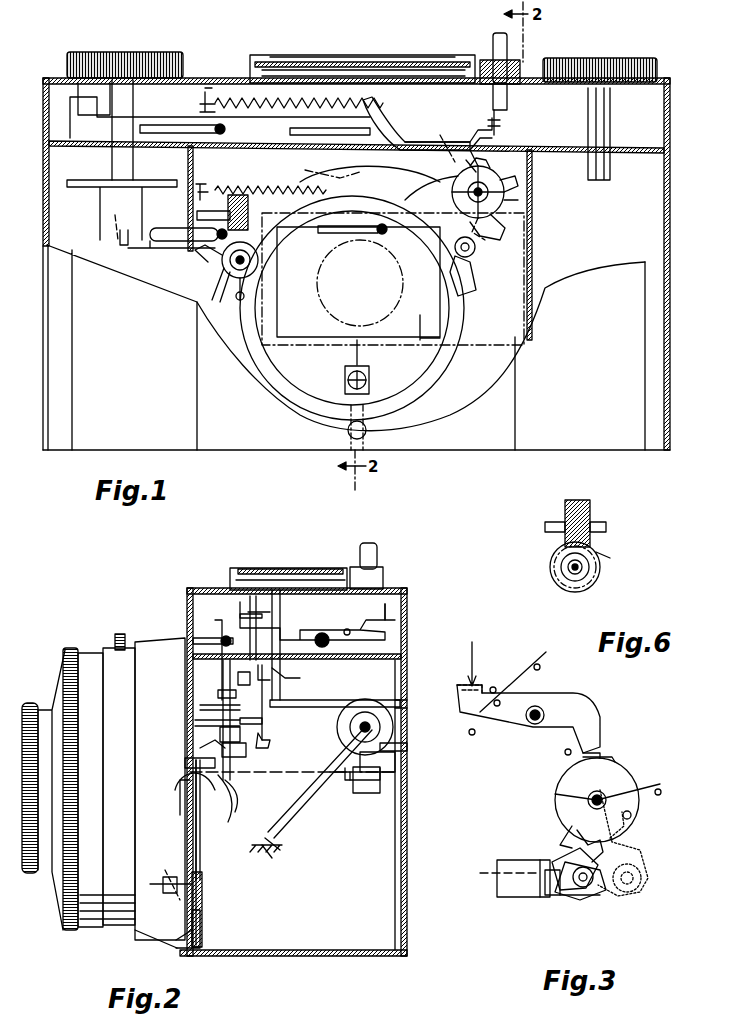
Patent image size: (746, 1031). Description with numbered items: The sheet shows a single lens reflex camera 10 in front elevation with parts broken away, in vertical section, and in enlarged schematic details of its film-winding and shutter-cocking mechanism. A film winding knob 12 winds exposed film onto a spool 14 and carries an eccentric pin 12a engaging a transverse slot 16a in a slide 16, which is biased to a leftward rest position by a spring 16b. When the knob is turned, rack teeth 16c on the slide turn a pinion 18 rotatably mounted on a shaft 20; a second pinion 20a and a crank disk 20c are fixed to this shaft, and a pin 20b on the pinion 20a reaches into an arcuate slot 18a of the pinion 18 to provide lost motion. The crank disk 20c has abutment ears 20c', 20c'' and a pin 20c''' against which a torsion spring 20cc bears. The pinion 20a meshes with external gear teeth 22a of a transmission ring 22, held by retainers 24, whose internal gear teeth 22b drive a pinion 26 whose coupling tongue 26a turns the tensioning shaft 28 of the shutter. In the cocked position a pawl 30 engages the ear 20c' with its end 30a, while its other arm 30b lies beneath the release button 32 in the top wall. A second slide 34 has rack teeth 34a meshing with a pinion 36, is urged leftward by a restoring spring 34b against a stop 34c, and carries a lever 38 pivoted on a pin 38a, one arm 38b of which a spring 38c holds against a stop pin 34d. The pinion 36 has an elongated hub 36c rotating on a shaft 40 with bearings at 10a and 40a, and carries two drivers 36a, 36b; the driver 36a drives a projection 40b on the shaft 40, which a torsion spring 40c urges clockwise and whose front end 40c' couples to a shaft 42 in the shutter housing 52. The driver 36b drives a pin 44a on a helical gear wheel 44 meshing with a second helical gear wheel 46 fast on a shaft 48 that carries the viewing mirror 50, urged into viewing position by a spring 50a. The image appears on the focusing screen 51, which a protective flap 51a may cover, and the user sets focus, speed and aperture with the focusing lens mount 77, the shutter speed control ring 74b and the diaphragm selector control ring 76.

In FIG. 1, the single lens reflex camera 10 is at (665, 182).
In FIG. 2, the single lens reflex camera 10 is at (403, 828).
In FIG. 2, the bearing in the camera body 10a is at (290, 778).
In FIG. 1, the film winding knob 12 is at (118, 64).
In FIG. 1, the pin 12a is at (88, 92).
In FIG. 2, the pin 12a is at (278, 600).
In FIG. 1, the spool 14 is at (100, 205).
In FIG. 1, the slide 16 is at (92, 135).
In FIG. 2, the slide 16 is at (215, 626).
In FIG. 1, the transverse slot 16a is at (103, 96).
In FIG. 2, the transverse slot 16a is at (252, 600).
In FIG. 1, the spring 16b is at (225, 100).
In FIG. 1, the rack teeth 16c is at (432, 182).
In FIG. 2, the pinion 18 is at (200, 707).
In FIG. 1, the arcuate slot 18a is at (445, 140).
In FIG. 1, the shaft 20 is at (510, 162).
In FIG. 2, the shaft 20 is at (340, 702).
In FIG. 3, the shaft 20 is at (556, 794).
In FIG. 1, the pinion 20a is at (518, 225).
In FIG. 2, the pinion 20a is at (222, 690).
In FIG. 1, the pin 20b is at (520, 203).
In FIG. 2, the pin 20b is at (218, 700).
In FIG. 2, the crank disk 20c is at (285, 702).
In FIG. 3, the crank disk 20c is at (598, 826).
In FIG. 1, the abutment ear 20c' is at (499, 141).
In FIG. 2, the abutment ear 20c' is at (265, 653).
In FIG. 3, the abutment ear 20c' is at (623, 750).
In FIG. 1, the abutment ear 20c'' is at (528, 240).
In FIG. 2, the abutment ear 20c'' is at (275, 719).
In FIG. 3, the abutment ear 20c'' is at (535, 827).
In FIG. 2, the pin 20c''' is at (289, 736).
In FIG. 1, the torsion spring 20cc is at (512, 187).
In FIG. 2, the torsion spring 20cc is at (238, 675).
In FIG. 3, the torsion spring 20cc is at (630, 824).
In FIG. 1, the transmission ring 22 is at (472, 306).
In FIG. 2, the transmission ring 22 is at (196, 836).
In FIG. 1, the external gear teeth 22a is at (320, 172).
In FIG. 1, the internal gear teeth 22b is at (425, 330).
In FIG. 2, the retainers 24 is at (202, 918).
In FIG. 1, the pinion 26 is at (330, 385).
In FIG. 2, the pinion 26 is at (202, 874).
In FIG. 1, the coupling tongue 26a is at (357, 340).
In FIG. 2, the coupling tongue 26a is at (160, 890).
In FIG. 2, the tensioning shaft 28 is at (165, 876).
In FIG. 1, the pawl 30 is at (468, 120).
In FIG. 2, the pawl 30 is at (322, 636).
In FIG. 3, the pawl 30 is at (548, 700).
In FIG. 1, the end of pawl 30a is at (470, 150).
In FIG. 2, the end of pawl 30a is at (288, 676).
In FIG. 3, the end of pawl 30a is at (598, 748).
In FIG. 1, the arm of pawl 30b is at (497, 118).
In FIG. 2, the arm of pawl 30b is at (392, 612).
In FIG. 3, the arm of pawl 30b is at (481, 690).
In FIG. 1, the release button 32 is at (506, 58).
In FIG. 2, the release button 32 is at (373, 555).
In FIG. 1, the slide 34 is at (163, 228).
In FIG. 2, the slide 34 is at (195, 723).
In FIG. 3, the slide 34 is at (536, 895).
In FIG. 1, the rack teeth 34a is at (178, 246).
In FIG. 1, the restoring spring 34b is at (216, 186).
In FIG. 1, the stop 34c is at (115, 225).
In FIG. 3, the stop pin 34d is at (497, 874).
In FIG. 2, the pinion 36 is at (232, 815).
In FIG. 1, the driver 36a is at (205, 275).
In FIG. 2, the driver 36a is at (225, 782).
In FIG. 1, the driver 36b is at (258, 258).
In FIG. 2, the driver 36b is at (335, 790).
In FIG. 6, the driver 36b is at (596, 577).
In FIG. 2, the hub 36c is at (318, 750).
In FIG. 6, the hub 36c is at (592, 560).
In FIG. 1, the lever 38 is at (476, 248).
In FIG. 2, the lever 38 is at (236, 735).
In FIG. 3, the lever 38 is at (604, 892).
In FIG. 1, the pin 38a is at (462, 262).
In FIG. 2, the pin 38a is at (262, 752).
In FIG. 3, the pin 38a is at (586, 890).
In FIG. 3, the arm of lever 38b is at (558, 900).
In FIG. 3, the spring 38c is at (540, 852).
In FIG. 1, the shaft 40 is at (252, 268).
In FIG. 2, the shaft 40 is at (340, 800).
In FIG. 6, the shaft 40 is at (576, 575).
In FIG. 2, the bearing 40a is at (398, 770).
In FIG. 1, the projection 40b is at (212, 272).
In FIG. 2, the projection 40b is at (182, 800).
In FIG. 1, the torsion spring 40c is at (240, 315).
In FIG. 2, the torsion spring 40c is at (177, 786).
In FIG. 2, the front end of shaft 40c' is at (183, 740).
In FIG. 2, the shaft 42 is at (185, 763).
In FIG. 1, the helical gear wheel 44 is at (252, 290).
In FIG. 2, the helical gear wheel 44 is at (368, 795).
In FIG. 6, the helical gear wheel 44 is at (566, 578).
In FIG. 2, the pin 44a is at (348, 790).
In FIG. 6, the pin 44a is at (558, 566).
In FIG. 1, the helical gear wheel 46 is at (242, 192).
In FIG. 2, the helical gear wheel 46 is at (368, 712).
In FIG. 6, the helical gear wheel 46 is at (578, 505).
In FIG. 1, the shaft 48 is at (200, 212).
In FIG. 2, the shaft 48 is at (408, 748).
In FIG. 6, the shaft 48 is at (598, 526).
In FIG. 1, the viewing mirror 50 is at (414, 335).
In FIG. 2, the viewing mirror 50 is at (280, 830).
In FIG. 1, the spring 50a is at (318, 236).
In FIG. 2, the spring 50a is at (402, 728).
In FIG. 1, the focusing screen 51 is at (300, 62).
In FIG. 1, the protective flap 51a is at (345, 64).
In FIG. 2, the protective flap 51a is at (313, 582).
In FIG. 2, the shutter housing 52 is at (90, 650).
In FIG. 2, the shutter speed control ring 74b is at (70, 645).
In FIG. 2, the diaphragm selector control ring 76 is at (122, 660).
In FIG. 2, the focusing lens mount 77 is at (32, 700).